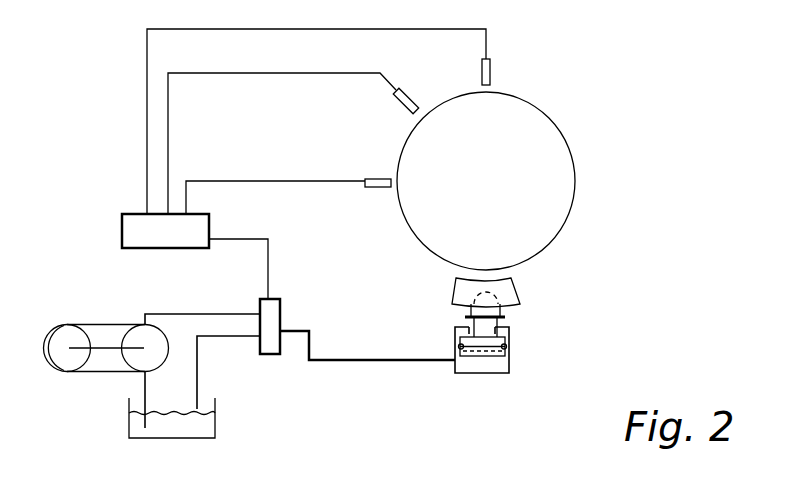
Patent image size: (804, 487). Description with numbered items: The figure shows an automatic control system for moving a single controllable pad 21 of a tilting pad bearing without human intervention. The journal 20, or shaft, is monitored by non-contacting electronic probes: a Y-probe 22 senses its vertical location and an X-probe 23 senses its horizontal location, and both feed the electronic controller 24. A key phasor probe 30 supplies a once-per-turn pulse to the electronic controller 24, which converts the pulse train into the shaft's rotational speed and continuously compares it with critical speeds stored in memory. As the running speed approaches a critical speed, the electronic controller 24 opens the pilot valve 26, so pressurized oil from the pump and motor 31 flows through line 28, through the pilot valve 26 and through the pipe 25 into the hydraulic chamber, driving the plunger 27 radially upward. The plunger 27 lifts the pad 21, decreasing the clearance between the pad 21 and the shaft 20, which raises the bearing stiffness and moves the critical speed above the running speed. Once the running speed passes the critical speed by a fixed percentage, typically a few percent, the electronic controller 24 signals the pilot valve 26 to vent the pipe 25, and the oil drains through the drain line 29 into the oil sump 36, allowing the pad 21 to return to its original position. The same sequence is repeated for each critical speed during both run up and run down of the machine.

The journal 20 is at (556, 163).
The controllable pad 21 is at (511, 289).
The Y-probe 22 is at (489, 72).
The X-probe 23 is at (373, 178).
The electronic controller 24 is at (130, 227).
The pipe 25 is at (310, 341).
The pilot valve 26 is at (270, 310).
The plunger 27 is at (497, 361).
The line 28 is at (143, 388).
The drain line 29 is at (197, 361).
The key phasor probe 30 is at (400, 96).
The pump and motor 31 is at (62, 333).
The oil sump 36 is at (203, 432).